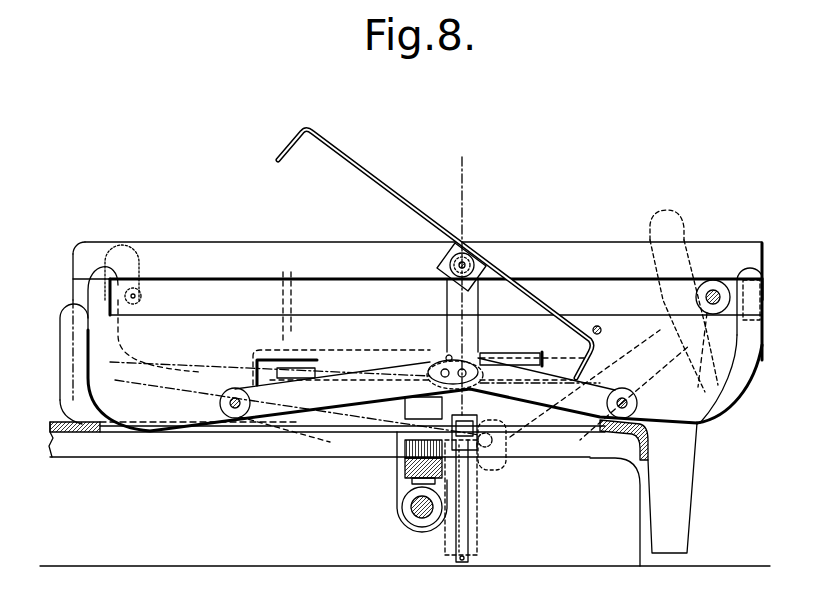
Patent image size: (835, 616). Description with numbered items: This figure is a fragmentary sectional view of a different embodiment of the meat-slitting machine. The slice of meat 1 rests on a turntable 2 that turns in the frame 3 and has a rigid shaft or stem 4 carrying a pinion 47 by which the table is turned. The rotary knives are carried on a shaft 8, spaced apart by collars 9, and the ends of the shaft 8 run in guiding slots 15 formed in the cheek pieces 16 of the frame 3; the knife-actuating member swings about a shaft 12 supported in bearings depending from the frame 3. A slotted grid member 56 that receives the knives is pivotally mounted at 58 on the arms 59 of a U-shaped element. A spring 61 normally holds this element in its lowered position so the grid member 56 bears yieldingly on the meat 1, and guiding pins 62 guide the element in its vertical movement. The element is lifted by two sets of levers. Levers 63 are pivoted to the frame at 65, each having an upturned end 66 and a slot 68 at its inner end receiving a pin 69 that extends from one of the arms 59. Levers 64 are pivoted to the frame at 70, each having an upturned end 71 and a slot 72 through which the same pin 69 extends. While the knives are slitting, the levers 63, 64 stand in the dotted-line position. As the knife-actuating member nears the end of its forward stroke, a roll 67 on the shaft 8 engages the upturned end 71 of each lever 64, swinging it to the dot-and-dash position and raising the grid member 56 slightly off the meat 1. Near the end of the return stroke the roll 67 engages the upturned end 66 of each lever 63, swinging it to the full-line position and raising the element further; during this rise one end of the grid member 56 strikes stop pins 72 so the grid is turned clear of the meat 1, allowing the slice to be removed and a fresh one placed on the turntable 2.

The meat 1 is at (362, 362).
The turntable 2 is at (297, 373).
The frame 3 is at (82, 433).
The shaft or stem 4 is at (435, 398).
The shaft 8 is at (709, 290).
The collars 9 is at (462, 580).
The shaft 12 is at (417, 512).
The guiding slots 15 is at (225, 288).
The cheek pieces 16 is at (250, 244).
The pinion 47 is at (410, 456).
The grid member 56 is at (378, 176).
The pivot 58 is at (467, 257).
The arms 59 is at (500, 278).
The spring 61 is at (478, 450).
The guiding pins 62 is at (470, 527).
The levers 63 is at (725, 445).
The levers 64 is at (160, 374).
The pivot 65 is at (622, 415).
The upturned end 66 is at (652, 224).
The roll 67 is at (162, 282).
The slot 68 is at (440, 363).
The pin 69 is at (468, 358).
The pivot 70 is at (234, 412).
The upturned end 71 is at (62, 336).
The slot / stop pins 72 is at (448, 356).